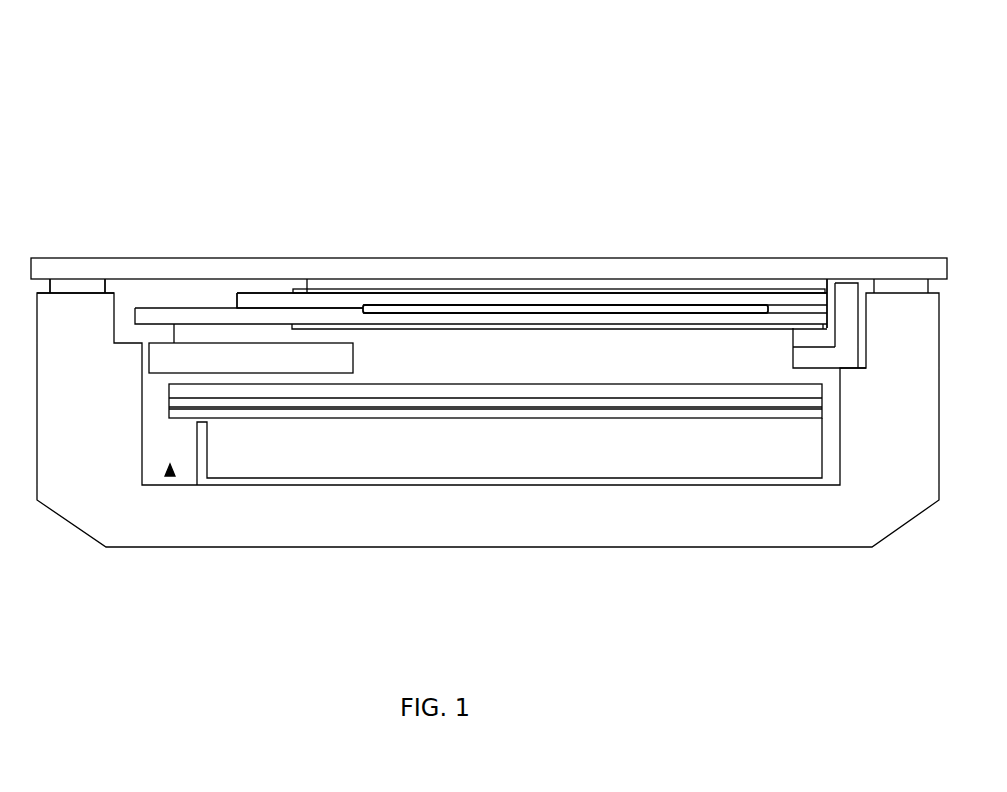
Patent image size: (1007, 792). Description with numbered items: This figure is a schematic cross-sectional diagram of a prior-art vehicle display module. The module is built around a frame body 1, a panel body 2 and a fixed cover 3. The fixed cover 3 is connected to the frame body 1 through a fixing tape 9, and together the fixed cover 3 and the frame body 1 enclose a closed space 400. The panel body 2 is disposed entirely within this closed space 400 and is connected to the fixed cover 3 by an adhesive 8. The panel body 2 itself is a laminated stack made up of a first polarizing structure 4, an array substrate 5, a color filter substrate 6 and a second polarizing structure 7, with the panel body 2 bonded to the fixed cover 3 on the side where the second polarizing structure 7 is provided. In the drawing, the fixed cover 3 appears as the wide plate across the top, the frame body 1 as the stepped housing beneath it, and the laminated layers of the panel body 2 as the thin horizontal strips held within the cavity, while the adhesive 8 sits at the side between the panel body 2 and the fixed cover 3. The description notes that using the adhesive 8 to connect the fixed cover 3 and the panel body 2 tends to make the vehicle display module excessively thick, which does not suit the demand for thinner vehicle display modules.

The frame body 1 is at (100, 502).
The panel body 2 is at (667, 98).
The fixed cover 3 is at (212, 266).
The first polarizing structure 4 is at (647, 326).
The array substrate 5 is at (457, 320).
The color filter substrate 6 is at (325, 298).
The second polarizing structure 7 is at (556, 291).
The adhesive 8 is at (797, 288).
The fixing tape 9 is at (80, 284).
The closed space 400 is at (170, 477).